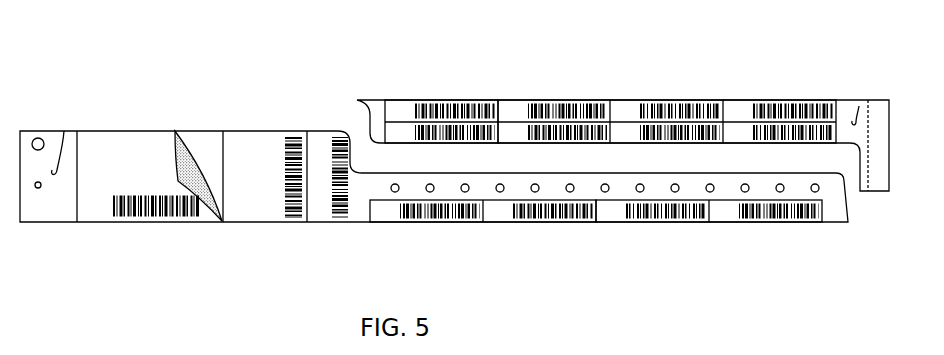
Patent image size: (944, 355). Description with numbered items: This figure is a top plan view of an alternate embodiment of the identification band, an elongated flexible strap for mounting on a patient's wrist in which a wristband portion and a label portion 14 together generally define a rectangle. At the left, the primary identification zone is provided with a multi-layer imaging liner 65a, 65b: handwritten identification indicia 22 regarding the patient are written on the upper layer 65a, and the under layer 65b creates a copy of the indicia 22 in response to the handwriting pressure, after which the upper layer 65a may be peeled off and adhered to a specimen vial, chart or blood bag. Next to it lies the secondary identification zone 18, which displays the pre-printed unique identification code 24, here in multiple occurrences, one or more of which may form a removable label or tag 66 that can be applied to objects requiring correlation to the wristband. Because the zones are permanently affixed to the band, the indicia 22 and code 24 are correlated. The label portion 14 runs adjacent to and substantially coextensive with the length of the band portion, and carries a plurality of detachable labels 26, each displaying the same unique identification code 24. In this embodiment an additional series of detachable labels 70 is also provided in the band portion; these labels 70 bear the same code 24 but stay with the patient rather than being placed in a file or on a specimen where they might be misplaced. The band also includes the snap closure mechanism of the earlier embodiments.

The label portion 14 is at (788, 72).
The secondary identification zone 18 is at (339, 133).
The identification indicia 22 is at (104, 148).
The unique identification code 24 is at (677, 112).
The detachable labels 26 is at (558, 100).
The upper layer 65a is at (190, 150).
The under layer 65b is at (215, 143).
The removable label or tag 66 is at (264, 214).
The detachable labels 70 is at (660, 214).